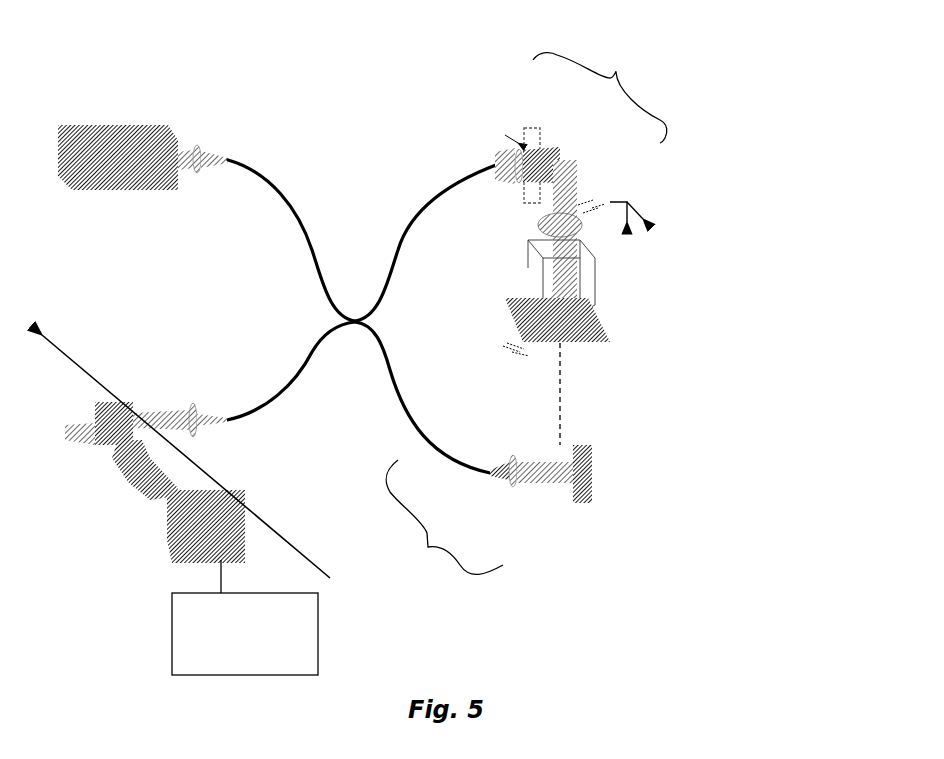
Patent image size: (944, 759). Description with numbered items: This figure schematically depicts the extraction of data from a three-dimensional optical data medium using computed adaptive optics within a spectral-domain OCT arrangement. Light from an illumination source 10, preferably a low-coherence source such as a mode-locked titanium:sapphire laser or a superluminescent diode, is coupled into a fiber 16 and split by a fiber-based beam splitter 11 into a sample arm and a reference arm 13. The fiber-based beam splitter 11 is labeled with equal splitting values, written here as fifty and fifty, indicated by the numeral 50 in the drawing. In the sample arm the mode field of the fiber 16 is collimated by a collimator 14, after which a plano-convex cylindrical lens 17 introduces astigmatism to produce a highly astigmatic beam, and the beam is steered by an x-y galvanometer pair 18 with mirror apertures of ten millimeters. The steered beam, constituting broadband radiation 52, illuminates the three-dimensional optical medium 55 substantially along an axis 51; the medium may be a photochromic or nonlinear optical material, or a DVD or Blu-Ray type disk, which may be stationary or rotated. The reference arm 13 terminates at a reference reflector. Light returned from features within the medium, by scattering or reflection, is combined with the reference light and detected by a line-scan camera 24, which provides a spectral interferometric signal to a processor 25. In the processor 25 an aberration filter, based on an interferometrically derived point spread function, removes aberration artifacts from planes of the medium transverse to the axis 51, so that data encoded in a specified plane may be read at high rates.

The illumination source 10 is at (105, 137).
The broadband radiation 52 is at (190, 170).
The fiber 16 is at (410, 227).
The 50:50 splitting ratio of fiber coupler 50 is at (356, 324).
The collimator 14 is at (517, 160).
The plano-convex cylindrical lens 17 is at (527, 138).
The x-y galvanometer pair 18 is at (552, 150).
The 3D optical medium 55 is at (577, 273).
The axis 51 is at (560, 445).
The line-scan camera 24 is at (233, 512).
The fiber-based beam splitter 11 is at (330, 578).
The processor 25 is at (245, 617).
The reference arm 13 is at (427, 552).